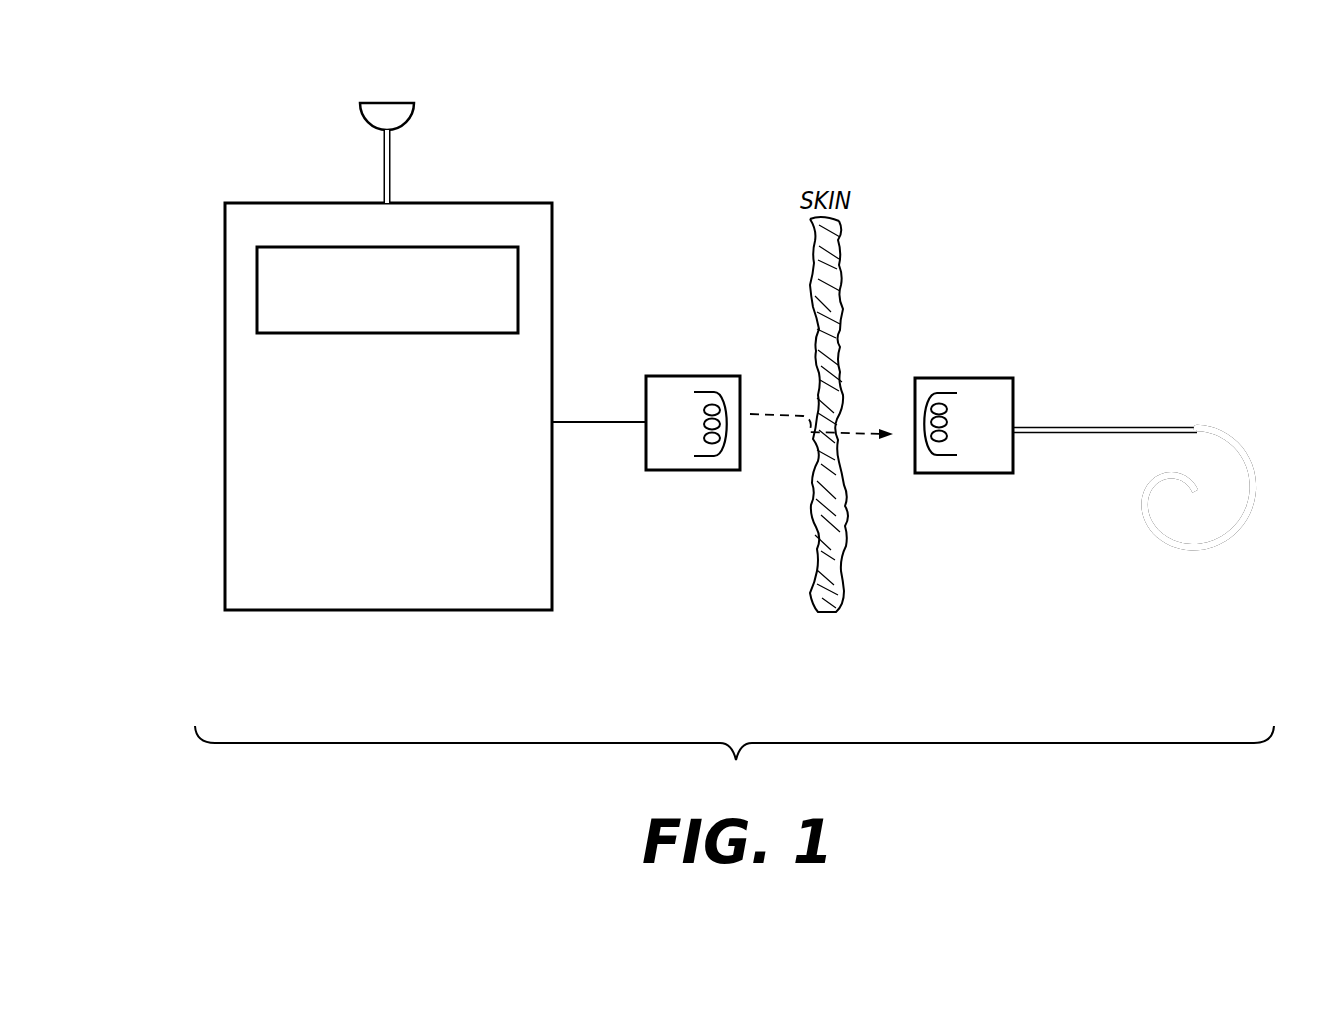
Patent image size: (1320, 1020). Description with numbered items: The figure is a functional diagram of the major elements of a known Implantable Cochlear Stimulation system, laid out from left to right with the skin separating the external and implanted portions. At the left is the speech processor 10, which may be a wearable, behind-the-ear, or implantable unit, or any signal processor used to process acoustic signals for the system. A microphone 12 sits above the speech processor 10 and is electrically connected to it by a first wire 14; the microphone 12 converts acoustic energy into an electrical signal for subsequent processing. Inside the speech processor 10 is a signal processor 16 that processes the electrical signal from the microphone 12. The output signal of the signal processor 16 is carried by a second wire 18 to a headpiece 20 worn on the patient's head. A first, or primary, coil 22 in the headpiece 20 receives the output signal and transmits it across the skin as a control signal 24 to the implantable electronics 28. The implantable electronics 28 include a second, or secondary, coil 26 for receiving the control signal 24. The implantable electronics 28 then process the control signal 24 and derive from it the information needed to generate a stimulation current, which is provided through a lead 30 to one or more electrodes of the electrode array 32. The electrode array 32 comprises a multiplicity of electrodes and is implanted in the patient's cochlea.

The speech processor 10 is at (223, 530).
The microphone 12 is at (387, 102).
The first wire 14 is at (382, 172).
The signal processor 16 is at (257, 300).
The second wire 18 is at (618, 422).
The headpiece 20 is at (702, 472).
The first coil 22 is at (703, 390).
The control signal 24 is at (857, 432).
The second coil 26 is at (947, 391).
The implantable electronics 28 is at (951, 475).
The lead 30 is at (1090, 428).
The electrode array 32 is at (1190, 553).